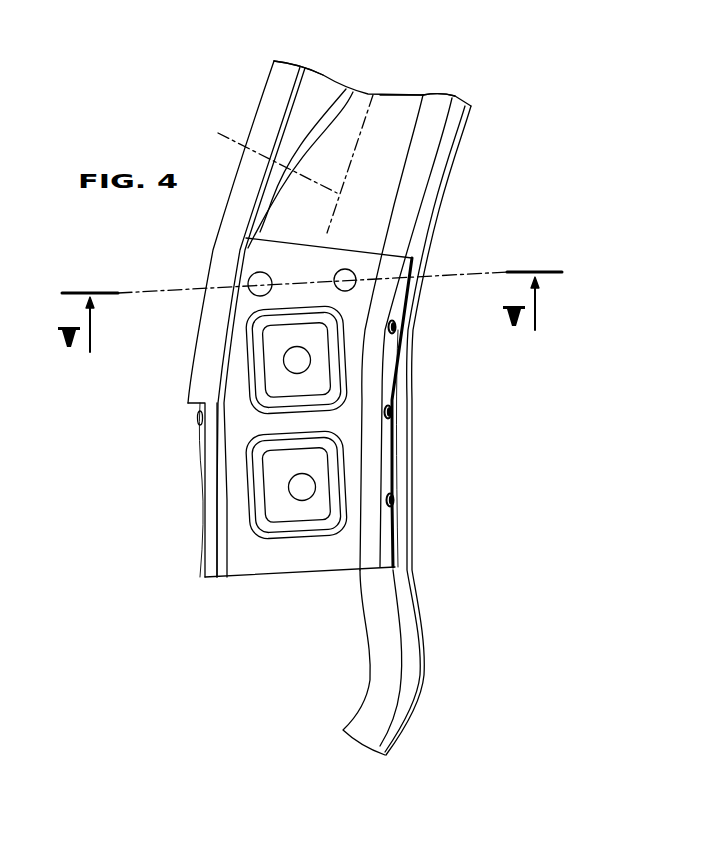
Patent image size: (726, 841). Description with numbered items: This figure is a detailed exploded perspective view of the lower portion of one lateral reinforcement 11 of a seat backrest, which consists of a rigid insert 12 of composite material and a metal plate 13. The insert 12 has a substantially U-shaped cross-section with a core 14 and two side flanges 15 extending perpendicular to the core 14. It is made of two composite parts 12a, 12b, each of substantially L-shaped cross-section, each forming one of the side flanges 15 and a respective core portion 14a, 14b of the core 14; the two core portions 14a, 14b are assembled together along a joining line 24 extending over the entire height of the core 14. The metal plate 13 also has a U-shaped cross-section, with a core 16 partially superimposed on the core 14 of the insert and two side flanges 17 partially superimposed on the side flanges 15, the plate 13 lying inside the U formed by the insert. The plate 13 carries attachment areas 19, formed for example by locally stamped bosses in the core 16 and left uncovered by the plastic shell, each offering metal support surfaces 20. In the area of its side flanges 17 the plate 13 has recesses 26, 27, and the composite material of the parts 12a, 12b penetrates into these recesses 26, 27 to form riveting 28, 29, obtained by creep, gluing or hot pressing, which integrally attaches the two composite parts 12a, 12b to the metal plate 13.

The lateral reinforcement 11 is at (515, 407).
The insert 12 is at (476, 103).
The composite part 12a is at (323, 73).
The composite part 12b is at (440, 92).
The metal plate 13 is at (260, 573).
The core 14 is at (385, 93).
The core portion 14a is at (347, 95).
The core portion 14b is at (403, 108).
The side flange 15 is at (275, 112).
The core 16 is at (305, 557).
The side flange 17 is at (203, 468).
The attachment area 19 is at (278, 340).
The metal support surface 20 is at (277, 367).
The joining line 24 is at (281, 164).
The recess 26 is at (333, 287).
The recess 27 is at (197, 423).
The riveting 28 is at (337, 276).
The riveting 29 is at (397, 322).